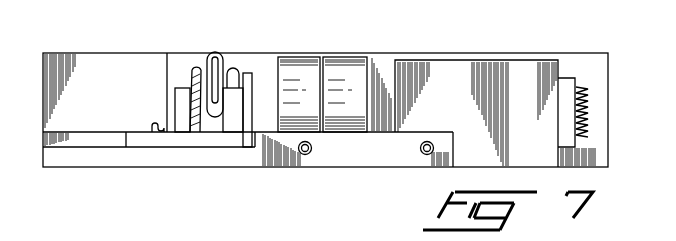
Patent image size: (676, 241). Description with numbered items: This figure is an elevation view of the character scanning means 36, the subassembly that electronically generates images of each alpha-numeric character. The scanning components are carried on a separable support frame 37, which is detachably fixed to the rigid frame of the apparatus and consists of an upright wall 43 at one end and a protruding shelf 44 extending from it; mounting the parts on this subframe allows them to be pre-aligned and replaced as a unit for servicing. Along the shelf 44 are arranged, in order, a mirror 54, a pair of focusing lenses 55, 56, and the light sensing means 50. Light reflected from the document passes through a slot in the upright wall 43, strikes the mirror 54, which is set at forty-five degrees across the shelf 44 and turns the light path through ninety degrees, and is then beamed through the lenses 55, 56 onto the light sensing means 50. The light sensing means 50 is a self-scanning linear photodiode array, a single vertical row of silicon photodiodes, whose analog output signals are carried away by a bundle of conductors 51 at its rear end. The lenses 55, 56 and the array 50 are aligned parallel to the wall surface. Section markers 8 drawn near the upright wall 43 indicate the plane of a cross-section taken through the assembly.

The section line 8- 8 is at (180, 75).
The character scanning means 36 is at (334, 74).
The separable support frame 37 is at (514, 53).
The upright wall 43 is at (134, 62).
The protruding shelf 44 is at (258, 167).
The light sensing means 50 is at (418, 50).
The bundle of conductors 51 is at (588, 108).
The mirror 54 is at (248, 121).
The focusing lens 55 is at (304, 57).
The focusing lens 56 is at (354, 56).